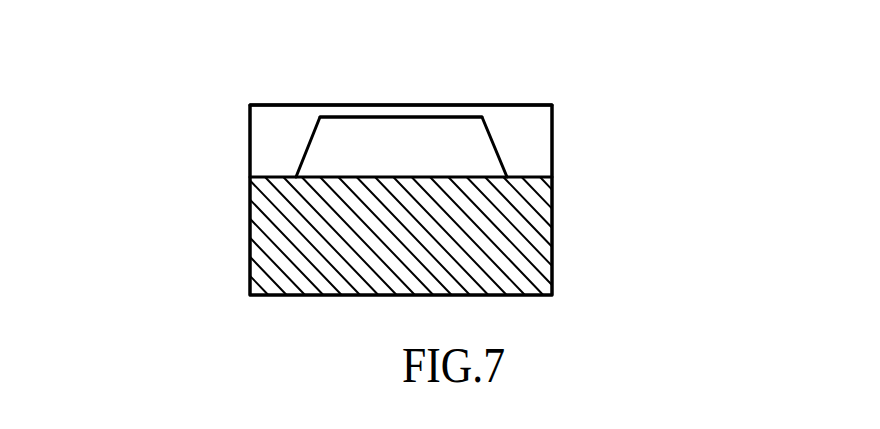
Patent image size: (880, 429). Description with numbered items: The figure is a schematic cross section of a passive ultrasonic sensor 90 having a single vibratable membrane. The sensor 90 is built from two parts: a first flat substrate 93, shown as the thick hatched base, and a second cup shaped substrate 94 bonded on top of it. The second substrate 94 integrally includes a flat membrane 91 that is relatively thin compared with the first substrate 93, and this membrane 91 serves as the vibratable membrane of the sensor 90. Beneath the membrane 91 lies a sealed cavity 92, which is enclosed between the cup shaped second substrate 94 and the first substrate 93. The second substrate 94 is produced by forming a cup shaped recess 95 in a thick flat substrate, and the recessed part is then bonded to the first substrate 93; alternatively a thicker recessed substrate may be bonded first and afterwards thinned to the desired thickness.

The passive ultrasonic sensor 90 is at (155, 148).
The flat membrane 91 is at (355, 104).
The sealed cavity 92 is at (468, 145).
The first flat substrate 93 is at (253, 243).
The second cup shaped substrate 94 is at (260, 130).
The cup shaped recess 95 is at (310, 149).